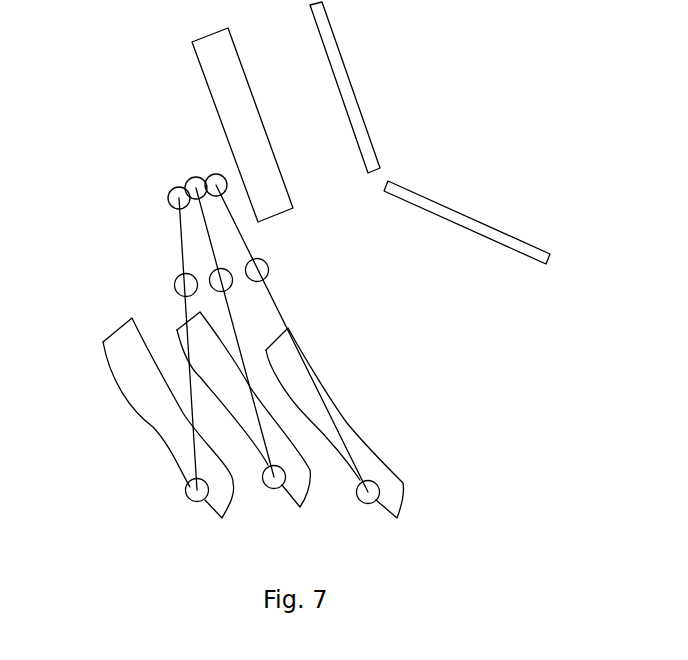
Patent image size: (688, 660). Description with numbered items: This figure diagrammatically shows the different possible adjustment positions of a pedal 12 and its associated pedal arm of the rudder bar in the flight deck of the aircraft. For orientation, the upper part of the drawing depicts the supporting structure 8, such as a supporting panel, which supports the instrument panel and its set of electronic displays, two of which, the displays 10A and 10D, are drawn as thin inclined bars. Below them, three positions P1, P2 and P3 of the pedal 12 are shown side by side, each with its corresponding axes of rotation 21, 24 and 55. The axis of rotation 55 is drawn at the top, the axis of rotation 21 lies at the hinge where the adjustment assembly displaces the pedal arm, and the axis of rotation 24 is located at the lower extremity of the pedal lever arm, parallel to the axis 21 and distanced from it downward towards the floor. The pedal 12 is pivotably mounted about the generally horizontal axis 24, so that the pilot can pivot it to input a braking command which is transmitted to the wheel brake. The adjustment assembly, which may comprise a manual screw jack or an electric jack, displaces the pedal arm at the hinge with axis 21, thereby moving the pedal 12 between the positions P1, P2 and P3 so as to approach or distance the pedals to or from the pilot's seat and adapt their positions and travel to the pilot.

The supporting structure 8 is at (253, 100).
The electronic display 10A is at (347, 72).
The electronic display 10D is at (470, 210).
The axis of rotation 55 is at (213, 175).
The axis of rotation 21 is at (175, 287).
The pedal 12 is at (152, 425).
The axis of rotation 24 is at (187, 502).
The adjustment position P1 is at (413, 508).
The adjustment position P2 is at (263, 497).
The adjustment position P3 is at (163, 502).